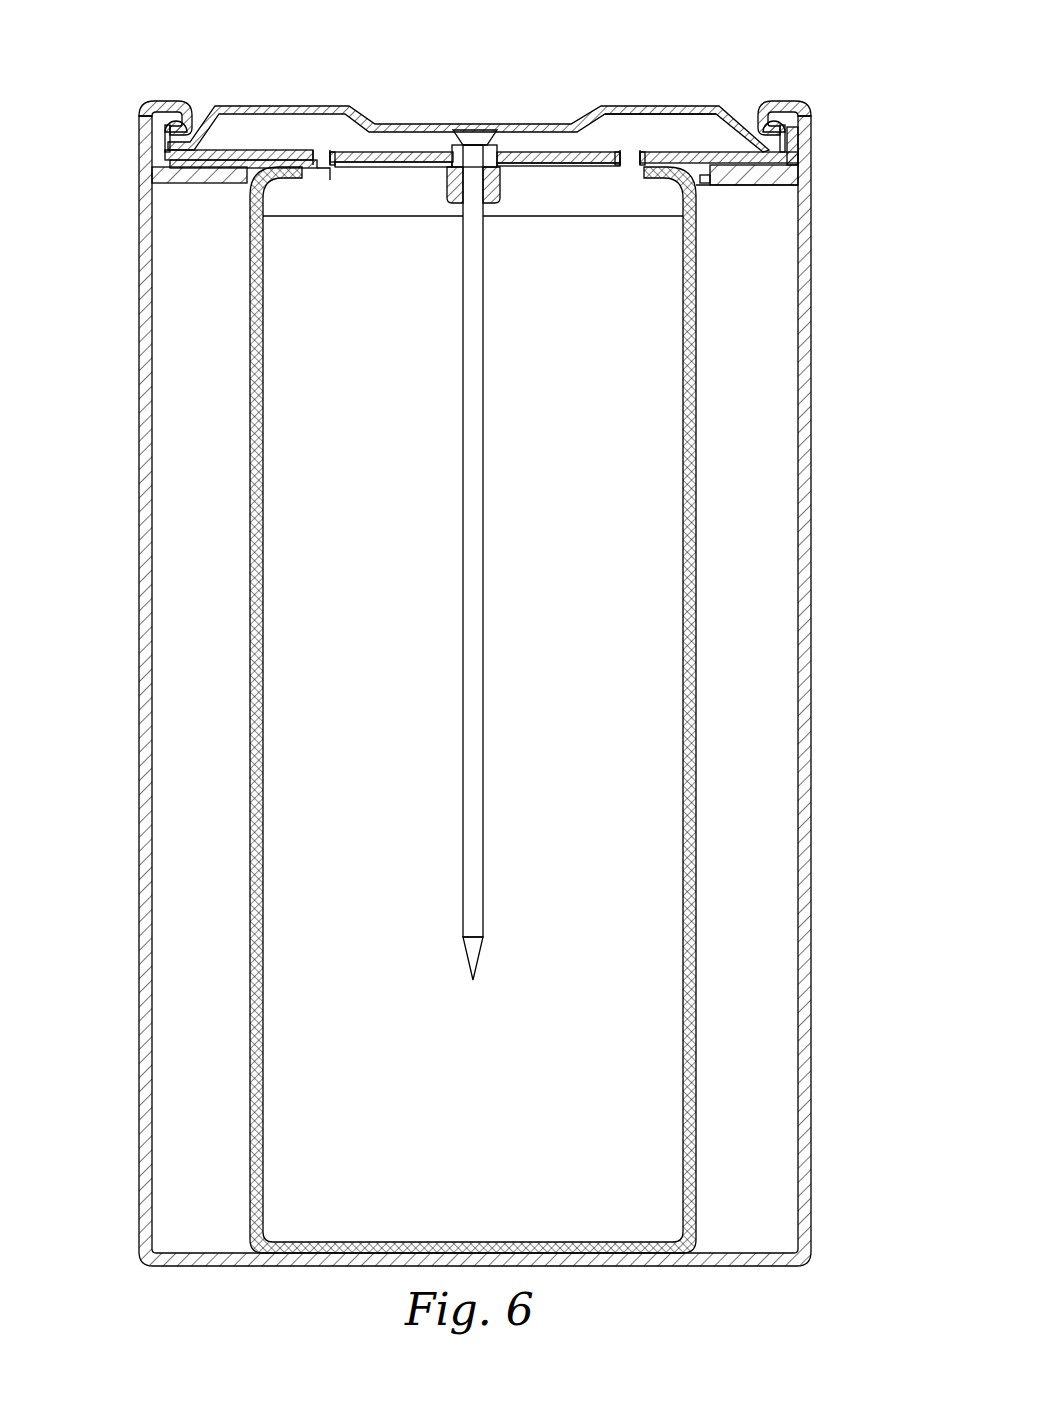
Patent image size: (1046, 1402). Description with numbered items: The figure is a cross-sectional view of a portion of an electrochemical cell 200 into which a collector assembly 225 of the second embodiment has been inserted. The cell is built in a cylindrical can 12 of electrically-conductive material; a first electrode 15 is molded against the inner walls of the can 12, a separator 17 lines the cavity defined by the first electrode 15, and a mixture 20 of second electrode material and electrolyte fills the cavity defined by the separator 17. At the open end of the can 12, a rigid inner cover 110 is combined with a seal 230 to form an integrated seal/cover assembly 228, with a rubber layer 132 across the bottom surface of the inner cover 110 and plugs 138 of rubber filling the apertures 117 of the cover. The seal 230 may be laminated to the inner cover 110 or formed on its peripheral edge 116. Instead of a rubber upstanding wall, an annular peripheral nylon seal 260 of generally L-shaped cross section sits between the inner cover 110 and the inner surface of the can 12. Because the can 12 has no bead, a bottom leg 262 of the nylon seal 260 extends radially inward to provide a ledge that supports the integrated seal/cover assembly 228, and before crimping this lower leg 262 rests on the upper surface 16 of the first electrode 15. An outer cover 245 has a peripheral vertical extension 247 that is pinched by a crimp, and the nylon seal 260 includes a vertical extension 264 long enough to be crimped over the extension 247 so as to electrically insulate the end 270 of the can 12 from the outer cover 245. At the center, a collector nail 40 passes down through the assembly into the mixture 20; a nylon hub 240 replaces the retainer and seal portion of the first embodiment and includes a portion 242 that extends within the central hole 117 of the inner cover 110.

The electrochemical cell 200 is at (423, 50).
The can 12 is at (815, 375).
The collector assembly 225 is at (104, 130).
The end of can 270 is at (790, 100).
The rigid inner cover 110 is at (252, 106).
The peripheral vertical extension 247 is at (800, 128).
The outer cover 245 is at (640, 104).
The integrated seal/cover assembly 228 is at (702, 138).
The apertures 117 is at (330, 148).
The rubber layer 132 is at (386, 168).
The plugs 138 is at (325, 166).
The seal 230 is at (350, 188).
The peripheral edge 116 is at (160, 158).
The hub portion 242 is at (466, 125).
The nylon hub 240 is at (500, 196).
The collector nail 40 is at (483, 805).
The vertical extension 264 is at (800, 152).
The peripheral nylon seal 260 is at (800, 175).
The bottom leg 262 is at (752, 195).
The upper surface of first electrode 16 is at (706, 190).
The separator 17 is at (695, 615).
The mixture 20 is at (605, 712).
The first electrode 15 is at (180, 530).